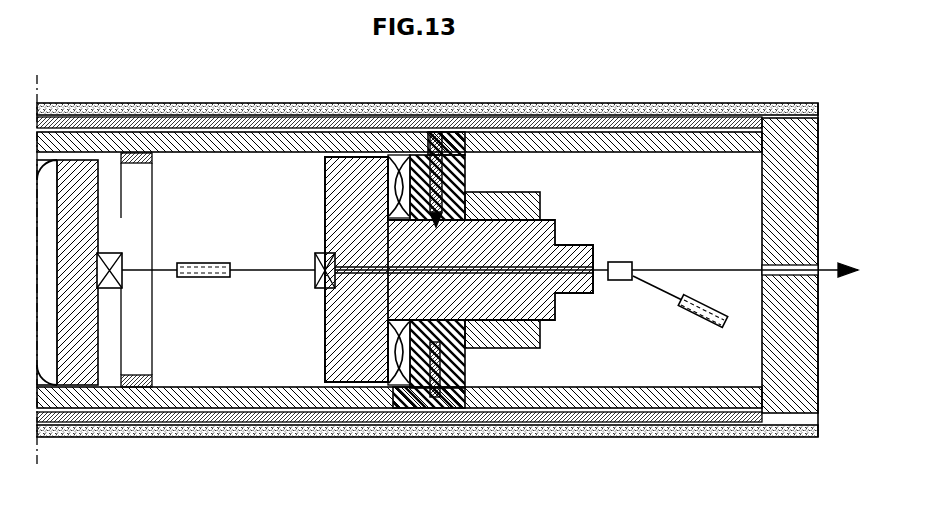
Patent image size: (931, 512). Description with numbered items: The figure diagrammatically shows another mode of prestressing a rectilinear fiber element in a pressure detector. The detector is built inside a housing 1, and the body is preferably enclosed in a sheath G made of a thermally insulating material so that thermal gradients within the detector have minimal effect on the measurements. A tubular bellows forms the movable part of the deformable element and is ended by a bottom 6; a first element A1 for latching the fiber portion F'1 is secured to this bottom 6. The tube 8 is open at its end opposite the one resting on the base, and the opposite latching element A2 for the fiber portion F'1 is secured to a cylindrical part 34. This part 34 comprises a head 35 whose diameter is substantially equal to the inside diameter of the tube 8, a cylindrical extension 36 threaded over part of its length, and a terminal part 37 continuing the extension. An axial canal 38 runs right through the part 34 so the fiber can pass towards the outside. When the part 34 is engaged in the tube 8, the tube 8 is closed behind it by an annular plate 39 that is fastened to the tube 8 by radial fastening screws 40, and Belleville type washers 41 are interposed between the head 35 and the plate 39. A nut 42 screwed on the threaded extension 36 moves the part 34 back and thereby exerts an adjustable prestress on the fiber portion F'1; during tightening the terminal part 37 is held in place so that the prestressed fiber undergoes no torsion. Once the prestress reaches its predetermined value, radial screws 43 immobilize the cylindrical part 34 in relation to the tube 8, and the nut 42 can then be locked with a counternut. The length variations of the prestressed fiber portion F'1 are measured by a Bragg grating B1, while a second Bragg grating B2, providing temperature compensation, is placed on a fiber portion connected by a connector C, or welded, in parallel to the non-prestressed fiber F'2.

The housing 1 is at (143, 124).
The bottom 6 is at (75, 175).
The tube 8 is at (182, 150).
The cylindrical part 34 is at (306, 181).
The head 35 is at (353, 177).
The cylindrical extension 36 is at (501, 253).
The terminal part 37 is at (577, 248).
The axial canal 38 is at (567, 277).
The annular plate 39 is at (460, 367).
The radial fastening screws 40 is at (437, 399).
The spring 41 is at (398, 375).
The nut 42 is at (490, 203).
The radial screws 43 is at (432, 132).
The sheath G is at (763, 104).
The first latching element A1 is at (112, 257).
The opposite fiber portion latching element A2 is at (314, 289).
The Bragg grating B1 is at (203, 258).
The Bragg grating B2 is at (680, 309).
The connector C is at (621, 262).
The fiber portion F'1 is at (217, 304).
The non-prestressed fiber F'2 is at (699, 244).